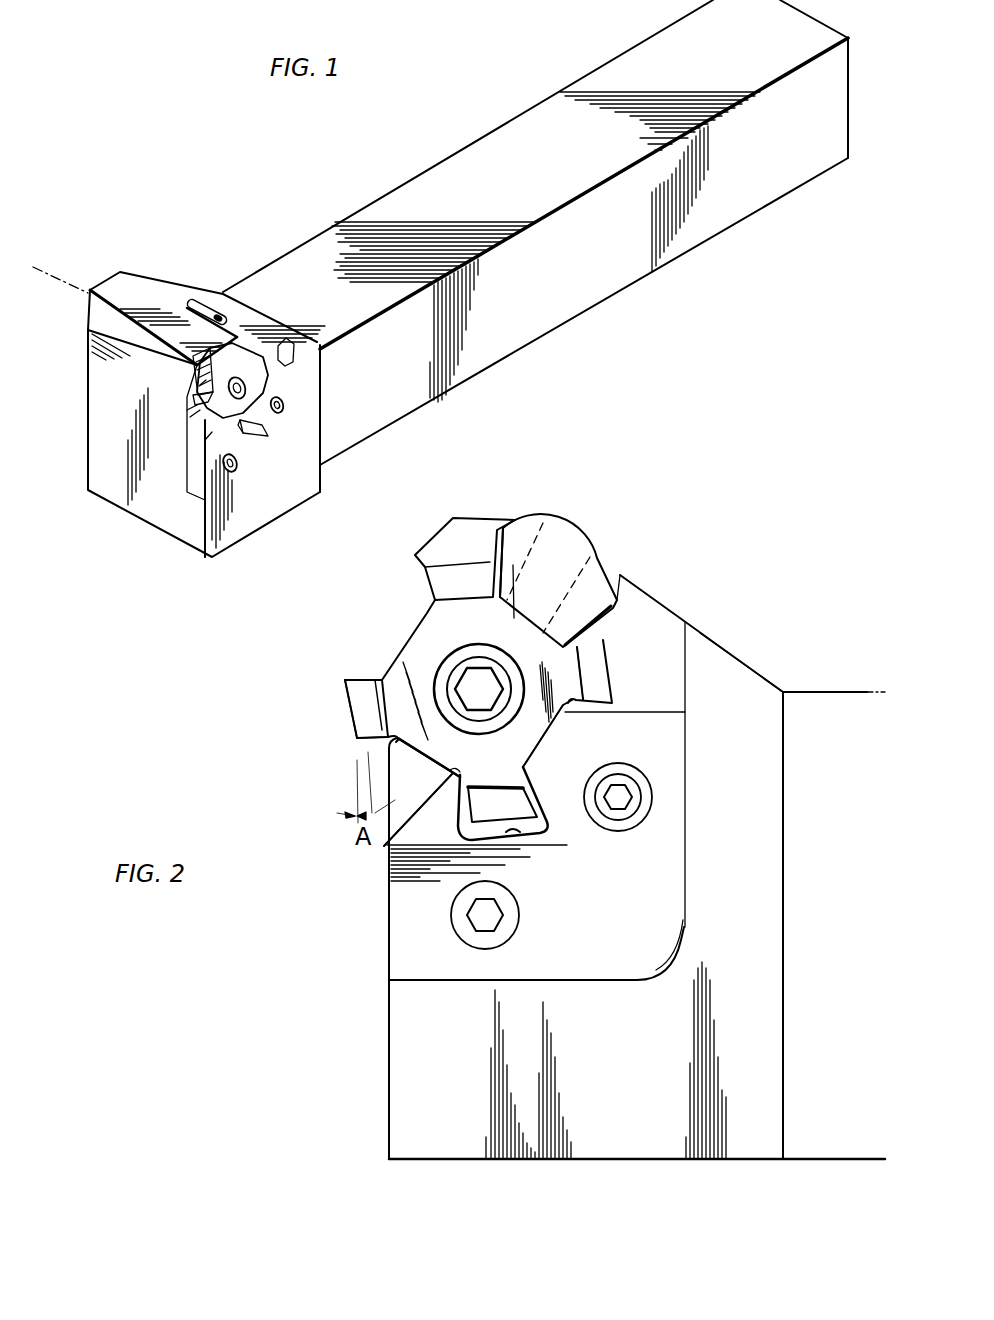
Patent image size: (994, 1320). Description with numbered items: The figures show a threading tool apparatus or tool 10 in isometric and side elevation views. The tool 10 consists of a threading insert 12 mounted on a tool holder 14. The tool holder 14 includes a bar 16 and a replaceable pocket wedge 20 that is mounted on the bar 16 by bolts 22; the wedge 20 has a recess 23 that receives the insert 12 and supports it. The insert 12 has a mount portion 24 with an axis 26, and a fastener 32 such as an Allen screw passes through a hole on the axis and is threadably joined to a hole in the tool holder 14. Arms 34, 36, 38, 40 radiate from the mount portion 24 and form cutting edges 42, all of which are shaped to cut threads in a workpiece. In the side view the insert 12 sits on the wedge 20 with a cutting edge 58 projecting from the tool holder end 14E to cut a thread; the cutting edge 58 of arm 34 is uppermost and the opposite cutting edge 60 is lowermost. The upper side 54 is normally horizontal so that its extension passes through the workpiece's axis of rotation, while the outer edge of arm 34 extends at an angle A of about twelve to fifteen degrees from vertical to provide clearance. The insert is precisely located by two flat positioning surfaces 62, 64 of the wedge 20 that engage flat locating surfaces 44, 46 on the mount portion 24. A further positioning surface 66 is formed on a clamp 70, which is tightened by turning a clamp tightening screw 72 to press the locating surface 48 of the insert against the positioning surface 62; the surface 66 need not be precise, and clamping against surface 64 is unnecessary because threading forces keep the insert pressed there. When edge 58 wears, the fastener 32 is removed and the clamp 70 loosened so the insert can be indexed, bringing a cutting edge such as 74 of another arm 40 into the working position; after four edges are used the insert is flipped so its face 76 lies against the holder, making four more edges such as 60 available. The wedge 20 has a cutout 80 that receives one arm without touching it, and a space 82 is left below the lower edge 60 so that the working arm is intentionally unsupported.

In FIG. 1, the threading tool apparatus 10 is at (461, 130).
In FIG. 1, the threading insert 12 is at (190, 417).
In FIG. 1, the tool holder 14 is at (297, 241).
In FIG. 2, the tool holder end 14E is at (389, 1158).
In FIG. 1, the bar 16 is at (577, 84).
In FIG. 2, the bar 16 is at (852, 692).
In FIG. 1, the replaceable pocket wedge 20 is at (198, 512).
In FIG. 2, the replaceable pocket wedge 20 is at (438, 983).
In FIG. 1, the bolts 22 is at (283, 412).
In FIG. 2, the bolts 22 is at (652, 797).
In FIG. 1, the recess 23 is at (205, 440).
In FIG. 1, the mount portion 24 is at (200, 393).
In FIG. 1, the axis 26 is at (58, 273).
In FIG. 1, the fastener 32 is at (250, 386).
In FIG. 2, the fastener 32 is at (462, 670).
In FIG. 1, the arm 34 is at (200, 385).
In FIG. 2, the arm 34 is at (350, 715).
In FIG. 1, the arm 36 is at (255, 432).
In FIG. 1, the arm 38 is at (285, 345).
In FIG. 1, the arm 40 is at (200, 363).
In FIG. 2, the arm 40 is at (465, 555).
In FIG. 1, the cutting edges 42 is at (187, 410).
In FIG. 2, the locating surface 44 is at (417, 747).
In FIG. 2, the locating surface 46 is at (551, 722).
In FIG. 2, the locating surface 48 is at (513, 565).
In FIG. 2, the upper side 54 is at (353, 678).
In FIG. 2, the cutting edge 58 is at (347, 679).
In FIG. 2, the cutting edge 60 is at (387, 740).
In FIG. 2, the positioning surface 62 is at (385, 845).
In FIG. 2, the positioning surface 64 is at (531, 741).
In FIG. 2, the clamp positioning surface 66 is at (518, 628).
In FIG. 1, the clamp 70 is at (204, 302).
In FIG. 2, the clamp 70 is at (621, 573).
In FIG. 2, the clamp tightening screw 72 is at (585, 542).
In FIG. 2, the cutting edge 74 is at (492, 545).
In FIG. 2, the face 76 is at (556, 680).
In FIG. 2, the cutout 80 is at (518, 836).
In FIG. 2, the space 82 is at (383, 737).